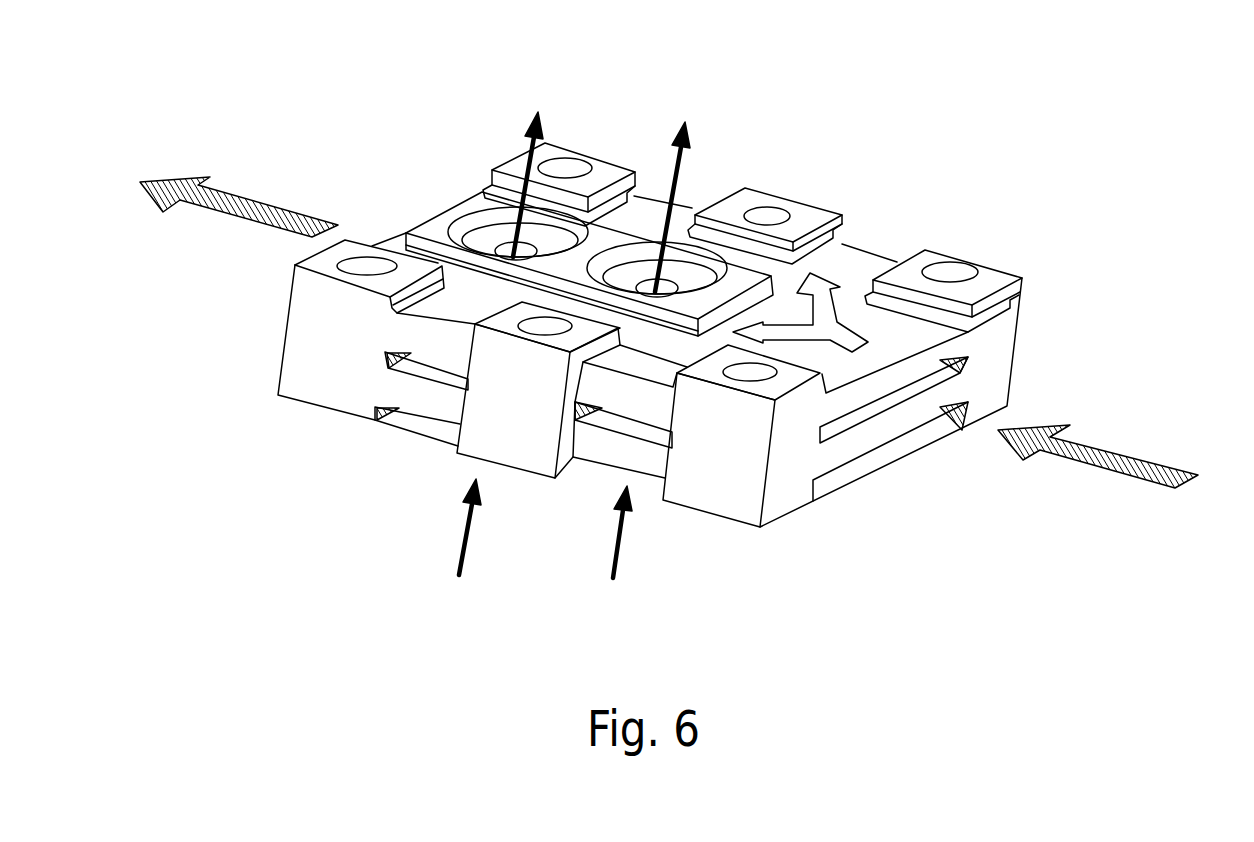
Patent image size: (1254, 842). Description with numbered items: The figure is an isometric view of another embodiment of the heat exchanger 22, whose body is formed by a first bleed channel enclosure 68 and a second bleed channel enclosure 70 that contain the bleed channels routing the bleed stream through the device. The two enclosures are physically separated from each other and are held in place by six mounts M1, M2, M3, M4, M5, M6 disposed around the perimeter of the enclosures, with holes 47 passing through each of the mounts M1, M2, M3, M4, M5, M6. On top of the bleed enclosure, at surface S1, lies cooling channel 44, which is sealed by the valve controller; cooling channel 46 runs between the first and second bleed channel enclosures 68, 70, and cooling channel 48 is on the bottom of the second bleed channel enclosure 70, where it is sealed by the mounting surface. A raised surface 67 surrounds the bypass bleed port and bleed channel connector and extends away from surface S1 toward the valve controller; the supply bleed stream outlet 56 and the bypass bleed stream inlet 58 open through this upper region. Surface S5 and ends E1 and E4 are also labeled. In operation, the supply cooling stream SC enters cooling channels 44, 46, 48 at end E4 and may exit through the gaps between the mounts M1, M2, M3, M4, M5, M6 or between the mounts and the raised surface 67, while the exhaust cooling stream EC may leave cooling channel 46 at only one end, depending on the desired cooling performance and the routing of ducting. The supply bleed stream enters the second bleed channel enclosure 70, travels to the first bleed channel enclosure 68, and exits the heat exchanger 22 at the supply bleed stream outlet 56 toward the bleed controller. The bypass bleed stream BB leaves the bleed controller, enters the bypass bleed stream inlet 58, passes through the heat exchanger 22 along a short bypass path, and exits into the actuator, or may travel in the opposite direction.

The heat exchanger 22 is at (358, 176).
The raised surface 67 is at (433, 224).
The supply bleed stream outlet 56 is at (480, 210).
The bypass bleed stream inlet 58 is at (632, 257).
The holes 47 is at (574, 168).
The first bleed channel enclosure 68 is at (388, 393).
The second bleed channel enclosure 70 is at (415, 334).
The cooling channel 44 is at (893, 347).
The cooling channel 46 is at (882, 408).
The cooling channel 48 is at (847, 478).
The mount M1 is at (722, 467).
The mount M2 is at (540, 423).
The mount M3 is at (310, 333).
The mount M4 is at (556, 158).
The mount M5 is at (812, 218).
The mount M6 is at (997, 280).
The surface S1 is at (467, 307).
The surface S5 is at (644, 428).
The end E1 is at (468, 460).
The end E4 is at (793, 515).
The bypass bleed stream BB is at (583, 354).
The exhaust cooling stream EC is at (223, 197).
The supply cooling stream SC is at (986, 388).